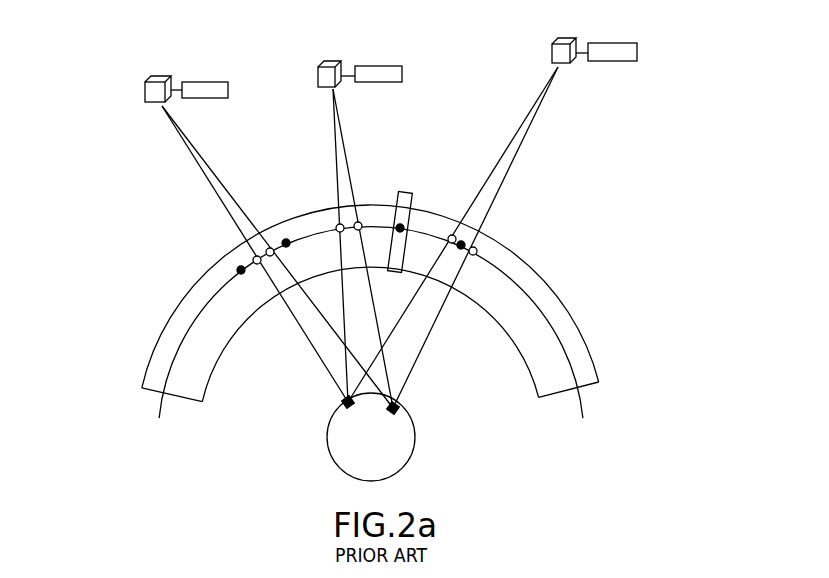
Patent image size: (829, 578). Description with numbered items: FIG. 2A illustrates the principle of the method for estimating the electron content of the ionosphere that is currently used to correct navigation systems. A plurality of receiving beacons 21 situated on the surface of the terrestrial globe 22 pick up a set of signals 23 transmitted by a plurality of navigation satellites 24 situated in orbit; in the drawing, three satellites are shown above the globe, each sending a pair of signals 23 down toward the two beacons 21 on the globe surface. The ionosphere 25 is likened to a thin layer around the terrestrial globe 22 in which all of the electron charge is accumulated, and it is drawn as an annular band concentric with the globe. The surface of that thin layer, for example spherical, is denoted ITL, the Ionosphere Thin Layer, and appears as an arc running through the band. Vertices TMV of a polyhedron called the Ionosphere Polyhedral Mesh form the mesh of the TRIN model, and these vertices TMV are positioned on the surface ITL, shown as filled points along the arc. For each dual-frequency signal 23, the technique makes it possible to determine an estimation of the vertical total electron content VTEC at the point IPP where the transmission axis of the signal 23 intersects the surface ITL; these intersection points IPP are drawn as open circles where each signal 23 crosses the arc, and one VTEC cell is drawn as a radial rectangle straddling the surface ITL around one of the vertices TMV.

The receiving beacon 21 is at (402, 403).
The terrestrial globe 22 is at (383, 461).
The signal 23 is at (228, 192).
The navigation satellite 24 is at (148, 101).
The ionosphere 25 is at (573, 333).
The ionosphere pierce point IPP is at (254, 259).
The vertex of the ionosphere polyhedral mesh TMV is at (238, 270).
The vertical total electron content VTEC is at (404, 180).
The ionosphere thin layer surface ITL is at (585, 403).